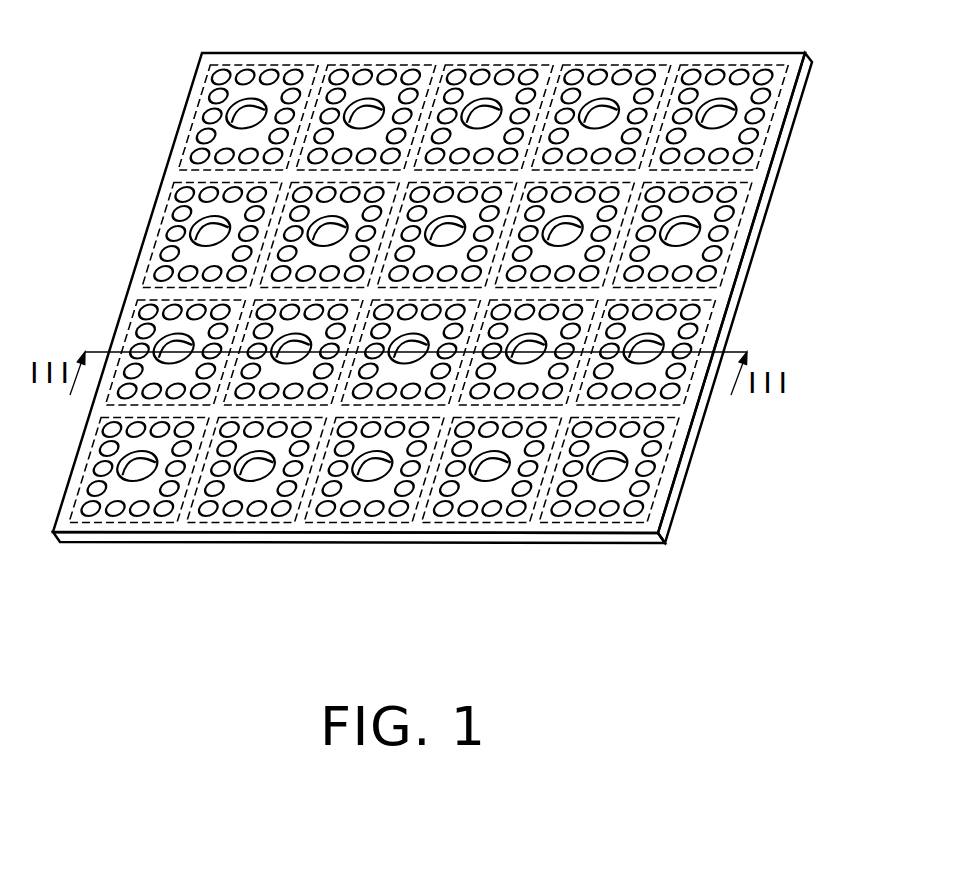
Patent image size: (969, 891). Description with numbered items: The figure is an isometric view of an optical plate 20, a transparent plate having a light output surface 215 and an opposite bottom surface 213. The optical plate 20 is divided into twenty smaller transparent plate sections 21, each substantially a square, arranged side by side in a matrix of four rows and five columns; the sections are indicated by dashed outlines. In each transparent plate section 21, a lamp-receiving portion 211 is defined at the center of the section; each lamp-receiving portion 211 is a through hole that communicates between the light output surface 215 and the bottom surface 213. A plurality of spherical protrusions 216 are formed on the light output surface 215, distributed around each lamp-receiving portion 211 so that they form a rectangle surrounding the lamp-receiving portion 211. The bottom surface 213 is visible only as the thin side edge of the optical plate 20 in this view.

The optical plate 20 is at (477, 276).
The transparent plate section 21 is at (757, 255).
The lamp-receiving portion 211 is at (687, 232).
The bottom surface 213 is at (740, 329).
The light output surface 215 is at (745, 193).
The spherical protrusions 216 is at (707, 273).